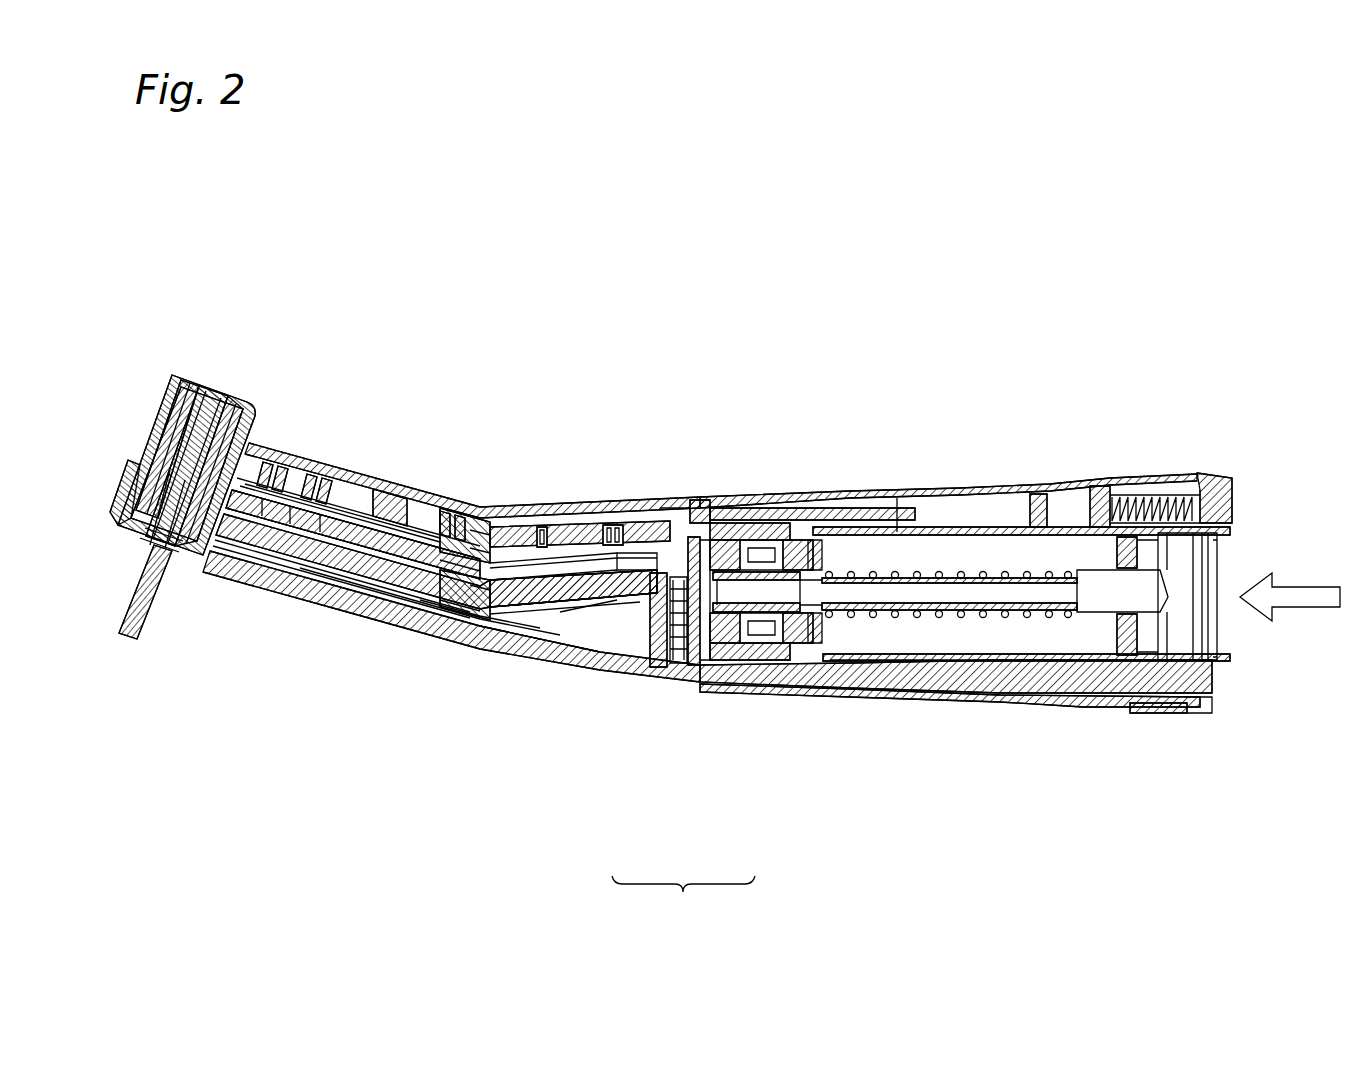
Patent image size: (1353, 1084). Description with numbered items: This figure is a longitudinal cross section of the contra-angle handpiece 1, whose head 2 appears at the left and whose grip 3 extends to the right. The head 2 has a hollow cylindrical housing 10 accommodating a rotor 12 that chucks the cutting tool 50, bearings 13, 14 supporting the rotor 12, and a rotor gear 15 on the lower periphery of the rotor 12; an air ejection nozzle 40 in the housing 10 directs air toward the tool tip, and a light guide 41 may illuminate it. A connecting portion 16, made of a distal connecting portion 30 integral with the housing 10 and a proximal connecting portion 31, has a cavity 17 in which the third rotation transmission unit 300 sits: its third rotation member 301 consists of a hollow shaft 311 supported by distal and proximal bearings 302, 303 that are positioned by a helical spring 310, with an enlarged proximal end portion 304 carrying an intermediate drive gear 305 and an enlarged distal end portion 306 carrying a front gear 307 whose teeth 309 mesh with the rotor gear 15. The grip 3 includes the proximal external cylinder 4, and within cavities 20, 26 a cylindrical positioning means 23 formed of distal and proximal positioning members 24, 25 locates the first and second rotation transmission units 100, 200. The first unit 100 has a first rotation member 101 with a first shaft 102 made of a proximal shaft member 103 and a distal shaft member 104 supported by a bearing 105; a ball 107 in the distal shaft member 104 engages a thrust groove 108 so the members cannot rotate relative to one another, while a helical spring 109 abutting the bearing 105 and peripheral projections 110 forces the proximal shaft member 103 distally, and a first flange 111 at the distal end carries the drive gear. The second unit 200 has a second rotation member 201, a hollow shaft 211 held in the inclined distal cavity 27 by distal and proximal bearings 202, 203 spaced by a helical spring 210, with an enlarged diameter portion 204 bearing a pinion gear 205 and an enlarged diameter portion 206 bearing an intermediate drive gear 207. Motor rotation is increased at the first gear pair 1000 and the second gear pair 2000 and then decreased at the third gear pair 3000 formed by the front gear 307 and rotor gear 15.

The handpiece 1 is at (855, 285).
The head 2 is at (152, 356).
The grip 3 is at (570, 700).
The proximal external cylinder 4 is at (925, 487).
The housing 10 is at (150, 418).
The rotor 12 is at (222, 392).
The bearing 13 is at (190, 505).
The bearing 14 is at (188, 380).
The rotor gear 15 is at (127, 470).
The connecting portion 16 is at (380, 442).
The cavity 17 is at (333, 590).
The cavity 20 is at (1073, 662).
The positioning means 23 is at (683, 897).
The distal positioning member 24 is at (590, 700).
The proximal positioning member 25 is at (868, 650).
The cavity 26 is at (692, 667).
The distal cavity 27 is at (590, 655).
The distal connecting portion 30 is at (372, 466).
The proximal connecting portion 31 is at (395, 520).
The air ejection nozzle 40 is at (195, 560).
The light guide 41 is at (512, 660).
The cutting tool 50 is at (133, 640).
The first rotation transmission unit 100 is at (797, 258).
The first rotation member 101 is at (816, 314).
The first shaft 102 is at (770, 358).
The proximal shaft member 103 is at (857, 575).
The distal shaft member 104 is at (782, 506).
The bearing 105 is at (737, 506).
The ball 107 is at (742, 648).
The thrust groove 108 is at (772, 650).
The helical spring 109 is at (1040, 637).
The peripheral projections 110 is at (1095, 703).
The first flange 111 is at (701, 540).
The second rotation transmission unit 200 is at (607, 355).
The second rotation member 201 is at (577, 445).
The distal bearing 202 is at (482, 645).
The proximal bearing 203 is at (640, 548).
The enlarged diameter portion 204 is at (652, 660).
The pinion gear 205 is at (662, 660).
The enlarged diameter portion 206 is at (520, 528).
The intermediate drive gear 207 is at (445, 620).
The helical spring 210 is at (606, 520).
The hollow shaft 211 is at (561, 520).
The third rotation transmission unit 300 is at (305, 790).
The third rotation member 301 is at (335, 708).
The distal bearing 302 is at (335, 470).
The proximal bearing 303 is at (452, 530).
The enlarged proximal end portion 304 is at (410, 630).
The intermediate drive gear 305 is at (432, 645).
The enlarged distal end portion 306 is at (322, 452).
The front gear 307 is at (273, 432).
The teeth 309 is at (232, 402).
The helical spring 310 is at (292, 612).
The hollow shaft 311 is at (372, 618).
The first gear pair 1000 is at (680, 520).
The second gear pair 2000 is at (487, 560).
The third gear pair 3000 is at (232, 580).